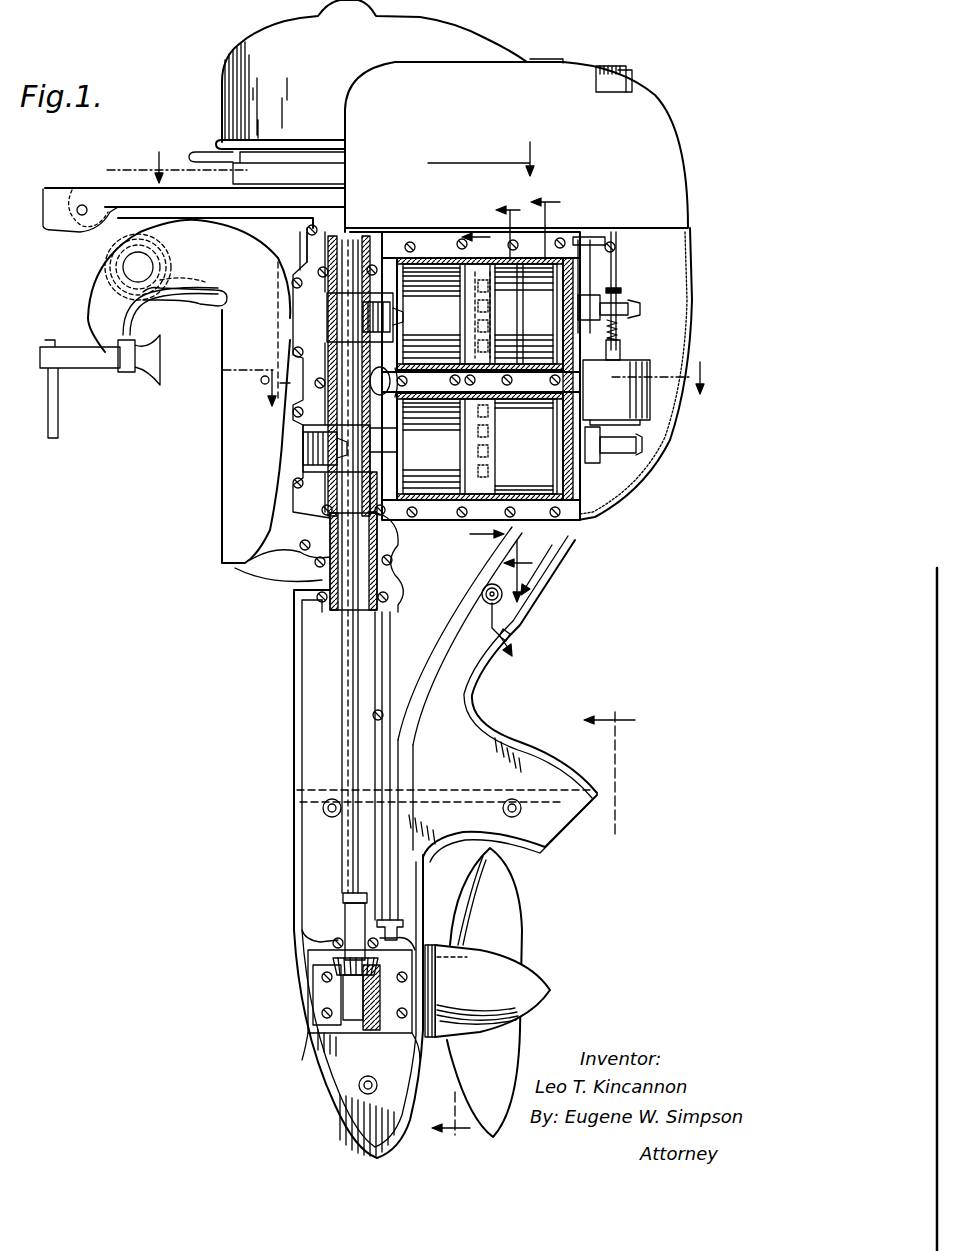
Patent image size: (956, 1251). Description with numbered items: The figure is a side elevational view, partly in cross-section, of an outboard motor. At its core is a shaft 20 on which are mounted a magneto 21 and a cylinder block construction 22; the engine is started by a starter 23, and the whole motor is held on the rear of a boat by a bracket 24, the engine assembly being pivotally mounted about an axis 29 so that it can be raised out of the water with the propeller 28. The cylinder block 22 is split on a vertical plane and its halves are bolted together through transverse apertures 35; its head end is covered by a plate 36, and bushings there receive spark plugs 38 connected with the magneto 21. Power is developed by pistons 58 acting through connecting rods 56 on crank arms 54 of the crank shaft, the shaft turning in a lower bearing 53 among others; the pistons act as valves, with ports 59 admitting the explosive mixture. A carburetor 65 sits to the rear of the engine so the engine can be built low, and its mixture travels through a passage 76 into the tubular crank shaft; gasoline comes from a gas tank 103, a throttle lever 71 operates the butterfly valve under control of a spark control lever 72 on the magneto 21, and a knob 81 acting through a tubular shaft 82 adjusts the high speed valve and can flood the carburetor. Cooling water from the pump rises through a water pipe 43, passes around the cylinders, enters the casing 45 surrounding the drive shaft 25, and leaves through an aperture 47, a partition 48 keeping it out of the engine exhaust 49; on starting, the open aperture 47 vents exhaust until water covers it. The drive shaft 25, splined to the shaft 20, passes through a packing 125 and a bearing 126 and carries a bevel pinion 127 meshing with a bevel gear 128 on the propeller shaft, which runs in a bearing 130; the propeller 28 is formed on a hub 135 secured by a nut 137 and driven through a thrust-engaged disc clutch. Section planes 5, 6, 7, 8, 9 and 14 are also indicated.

The section line 5- 5 is at (533, 926).
The section line 6- 6 is at (471, 384).
The section line 7- 7 is at (478, 391).
The section line 8- 8 is at (514, 392).
The section line 9- 9 is at (540, 384).
The tank 14 is at (333, 162).
The shaft 20 is at (348, 258).
The magneto 21 is at (218, 103).
The cylinder block construction 22 is at (448, 245).
The starter 23 is at (233, 45).
The bracket 24 is at (218, 446).
The drive shaft 25 is at (350, 725).
The propeller 28 is at (512, 925).
The axis 29 is at (168, 266).
The transverse apertures 35 is at (465, 240).
The plate 36 is at (578, 481).
The spark plugs 38 is at (625, 305).
The water pipe 43 is at (410, 712).
The casing 45 is at (300, 702).
The aperture 47 is at (512, 638).
The partition 48 is at (488, 616).
The engine exhaust 49 is at (560, 838).
The lower bearing 53 is at (355, 566).
The crank arms 54 is at (343, 347).
The connecting rods 56 is at (392, 316).
The pistons 58 is at (470, 288).
The ports 59 is at (482, 330).
The carburetor 65 is at (655, 408).
The throttle lever 71 is at (590, 245).
The spark control lever 72 is at (200, 160).
The passage 76 is at (388, 372).
The knob 81 is at (620, 66).
The tubular shaft 82 is at (618, 263).
The gas tank 103 is at (490, 107).
The packing 125 is at (343, 896).
The bearing 126 is at (352, 912).
The bevel pinion 127 is at (308, 975).
The bevel gear 128 is at (375, 1032).
The bearing 130 is at (320, 1030).
The hub 135 is at (452, 950).
The nut 137 is at (540, 985).